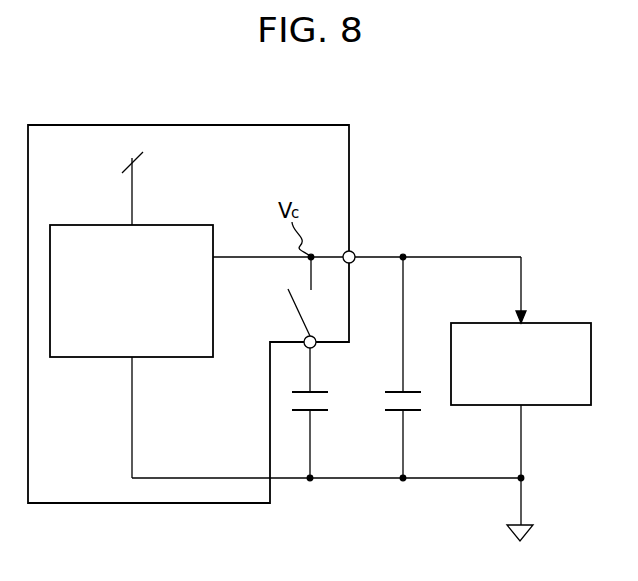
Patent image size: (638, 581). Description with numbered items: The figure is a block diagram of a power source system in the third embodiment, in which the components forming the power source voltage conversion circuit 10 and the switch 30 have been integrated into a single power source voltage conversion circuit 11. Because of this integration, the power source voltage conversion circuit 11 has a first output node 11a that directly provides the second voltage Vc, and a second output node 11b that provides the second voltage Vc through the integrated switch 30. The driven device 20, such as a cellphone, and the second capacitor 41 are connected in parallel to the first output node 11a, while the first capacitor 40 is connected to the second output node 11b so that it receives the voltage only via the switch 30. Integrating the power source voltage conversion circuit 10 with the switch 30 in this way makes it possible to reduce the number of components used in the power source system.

The power source voltage conversion circuit 10 is at (183, 224).
The power source voltage conversion circuit 11 is at (352, 163).
The first output node 11a is at (353, 252).
The second output node 11b is at (315, 346).
The driven device 20 is at (562, 322).
The switch 30 is at (298, 305).
The first capacitor 40 is at (323, 412).
The second capacitor 41 is at (415, 412).